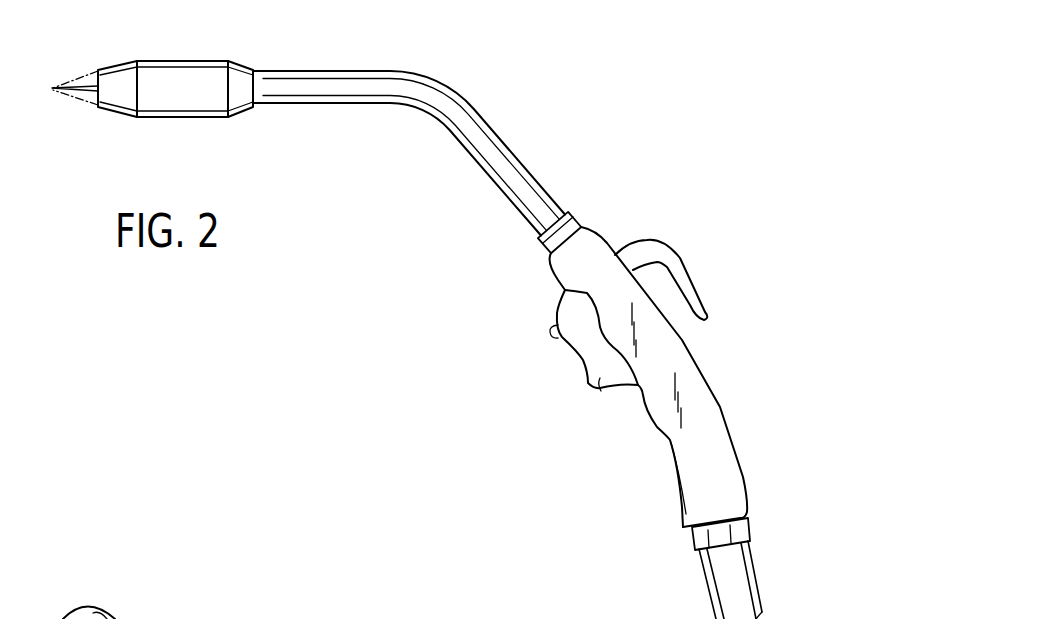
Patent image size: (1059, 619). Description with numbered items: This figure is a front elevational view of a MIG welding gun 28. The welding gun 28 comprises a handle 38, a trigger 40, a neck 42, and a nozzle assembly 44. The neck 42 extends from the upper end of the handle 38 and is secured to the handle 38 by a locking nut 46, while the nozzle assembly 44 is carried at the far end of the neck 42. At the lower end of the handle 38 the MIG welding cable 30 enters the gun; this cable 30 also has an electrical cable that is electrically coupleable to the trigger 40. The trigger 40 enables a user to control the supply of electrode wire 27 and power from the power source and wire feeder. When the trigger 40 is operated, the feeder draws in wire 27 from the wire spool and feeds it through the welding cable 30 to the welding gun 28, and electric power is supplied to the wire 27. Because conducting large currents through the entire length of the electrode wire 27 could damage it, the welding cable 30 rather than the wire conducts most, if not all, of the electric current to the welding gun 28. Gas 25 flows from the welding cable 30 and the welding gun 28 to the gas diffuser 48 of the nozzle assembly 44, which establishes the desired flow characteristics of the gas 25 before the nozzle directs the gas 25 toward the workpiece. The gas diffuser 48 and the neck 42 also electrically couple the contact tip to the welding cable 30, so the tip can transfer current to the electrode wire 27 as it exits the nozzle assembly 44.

The welding gun 28 is at (668, 96).
The nozzle assembly 44 is at (187, 62).
The gas 25 is at (82, 78).
The electrode wire 27 is at (52, 88).
The neck 42 is at (530, 170).
The locking nut 46 is at (543, 241).
The handle 38 is at (712, 415).
The trigger 40 is at (597, 388).
The MIG welding cable 30 is at (735, 567).
The gas diffuser 48 is at (118, 618).